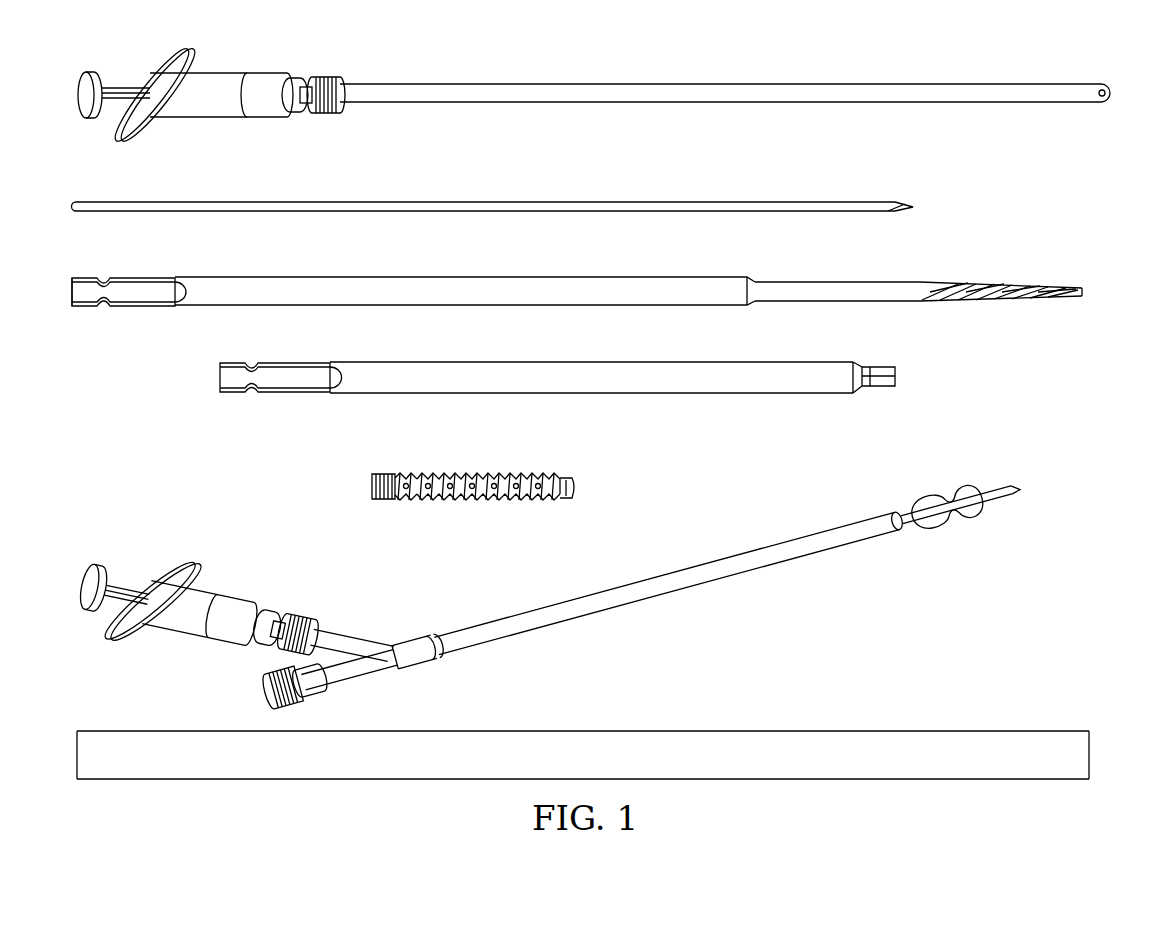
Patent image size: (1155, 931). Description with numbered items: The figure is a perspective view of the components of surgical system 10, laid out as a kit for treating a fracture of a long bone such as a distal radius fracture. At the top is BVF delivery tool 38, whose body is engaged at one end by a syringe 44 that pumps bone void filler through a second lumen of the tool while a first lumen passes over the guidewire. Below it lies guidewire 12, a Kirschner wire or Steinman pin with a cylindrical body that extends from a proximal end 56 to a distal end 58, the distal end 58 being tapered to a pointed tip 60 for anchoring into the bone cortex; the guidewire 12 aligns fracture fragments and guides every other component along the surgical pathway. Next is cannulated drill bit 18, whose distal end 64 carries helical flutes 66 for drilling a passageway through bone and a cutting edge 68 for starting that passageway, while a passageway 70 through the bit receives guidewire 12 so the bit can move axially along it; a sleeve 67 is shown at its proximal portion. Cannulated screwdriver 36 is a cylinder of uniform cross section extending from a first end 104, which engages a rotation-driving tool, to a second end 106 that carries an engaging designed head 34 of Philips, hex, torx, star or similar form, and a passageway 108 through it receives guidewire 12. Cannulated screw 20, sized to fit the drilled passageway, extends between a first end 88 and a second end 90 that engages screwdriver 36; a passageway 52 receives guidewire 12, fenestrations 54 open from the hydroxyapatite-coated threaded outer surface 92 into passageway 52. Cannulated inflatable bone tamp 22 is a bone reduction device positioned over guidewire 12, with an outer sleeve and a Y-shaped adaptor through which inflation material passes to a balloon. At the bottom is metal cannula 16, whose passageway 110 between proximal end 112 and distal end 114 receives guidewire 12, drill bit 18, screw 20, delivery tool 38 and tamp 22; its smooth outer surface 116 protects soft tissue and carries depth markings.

The system 10 is at (90, 477).
The guidewire 12 is at (528, 195).
The cannula 16 is at (601, 739).
The cannulated drill bit 18 is at (560, 291).
The cannulated screw 20 is at (464, 502).
The cannulated inflatable bone tamp 22 is at (711, 602).
The engaging designed head 34 is at (885, 386).
The cannulated screwdriver 36 is at (658, 399).
The BVF delivery tool 38 is at (594, 108).
The syringe 44 is at (278, 115).
The passageway 52 is at (372, 478).
The fenestrations 54 is at (437, 470).
The proximal end 56 is at (128, 214).
The distal end 58 is at (839, 200).
The pointed tip 60 is at (915, 205).
The distal end 64 is at (920, 283).
The helical flutes 66 is at (975, 280).
The drill sleeve 67 is at (150, 275).
The cutting edge 68 is at (1085, 290).
The passageway 70 is at (72, 293).
The first end 88 is at (571, 478).
The second end 90 is at (392, 473).
The threaded outer surface 92 is at (528, 470).
The first end 104 is at (520, 399).
The second end 106 is at (828, 396).
The passageway 108 is at (215, 376).
The passageway 110 is at (1093, 743).
The proximal end 112 is at (128, 782).
The distal end 114 is at (1040, 782).
The outer surface 116 is at (690, 730).